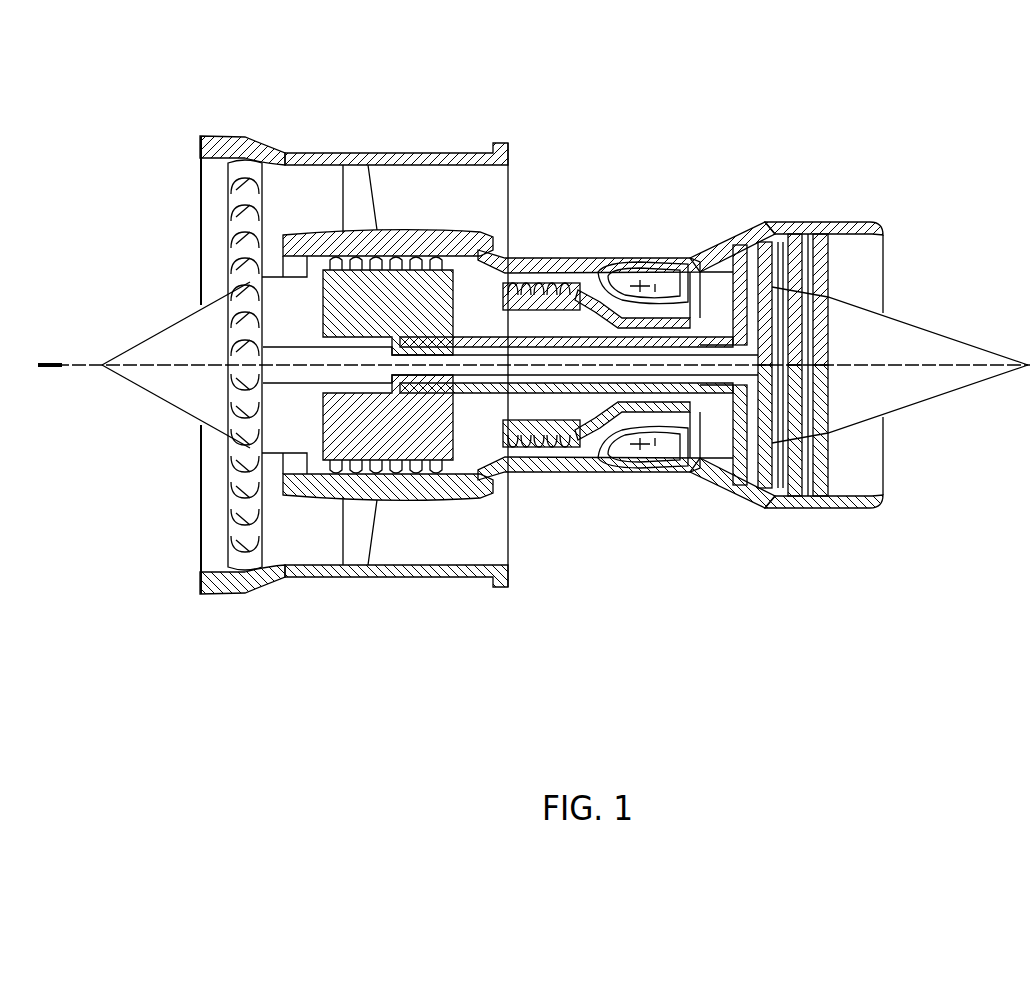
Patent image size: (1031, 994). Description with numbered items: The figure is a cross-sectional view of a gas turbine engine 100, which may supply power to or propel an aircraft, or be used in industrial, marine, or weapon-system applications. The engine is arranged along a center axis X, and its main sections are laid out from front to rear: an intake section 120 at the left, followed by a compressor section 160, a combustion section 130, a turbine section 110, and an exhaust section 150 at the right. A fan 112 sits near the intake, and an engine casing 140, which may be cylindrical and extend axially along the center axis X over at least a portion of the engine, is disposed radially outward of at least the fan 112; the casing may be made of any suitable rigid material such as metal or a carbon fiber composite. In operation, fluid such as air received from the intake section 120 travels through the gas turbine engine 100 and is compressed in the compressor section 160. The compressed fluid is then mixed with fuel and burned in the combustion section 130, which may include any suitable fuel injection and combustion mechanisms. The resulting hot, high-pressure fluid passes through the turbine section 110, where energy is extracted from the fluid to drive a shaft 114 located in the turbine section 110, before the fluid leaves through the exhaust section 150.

The gas turbine engine 100 is at (534, 362).
The turbine section 110 is at (736, 240).
The fan 112 is at (234, 253).
The shaft 114 is at (565, 366).
The intake section 120 is at (212, 190).
The combustion section 130 is at (645, 258).
The engine casing 140 is at (236, 592).
The exhaust section 150 is at (830, 233).
The compressor section 160 is at (331, 258).
The center axis X is at (292, 370).